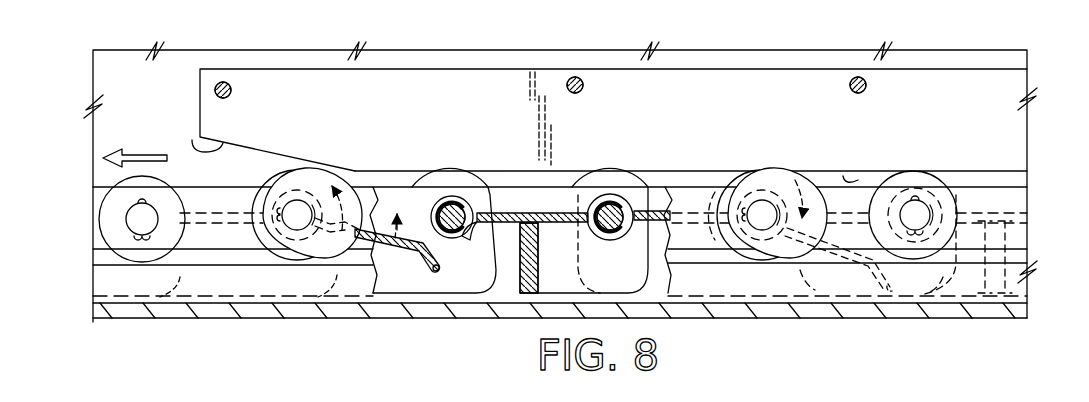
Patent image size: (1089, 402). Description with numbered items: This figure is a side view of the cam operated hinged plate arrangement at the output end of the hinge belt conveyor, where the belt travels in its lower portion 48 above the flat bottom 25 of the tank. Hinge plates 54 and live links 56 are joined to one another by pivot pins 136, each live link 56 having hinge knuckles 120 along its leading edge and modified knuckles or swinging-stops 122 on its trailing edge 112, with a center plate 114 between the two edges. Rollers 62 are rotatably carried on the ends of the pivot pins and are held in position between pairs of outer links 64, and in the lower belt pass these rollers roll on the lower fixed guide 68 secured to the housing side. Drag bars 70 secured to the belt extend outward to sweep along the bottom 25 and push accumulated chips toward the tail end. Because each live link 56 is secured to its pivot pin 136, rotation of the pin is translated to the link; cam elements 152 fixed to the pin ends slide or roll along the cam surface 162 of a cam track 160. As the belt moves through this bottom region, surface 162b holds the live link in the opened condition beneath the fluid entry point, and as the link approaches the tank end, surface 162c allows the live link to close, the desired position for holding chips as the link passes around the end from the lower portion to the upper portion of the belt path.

The flat bottom 25 is at (217, 308).
The lower portion 48 is at (700, 174).
The hinge plate 54 is at (650, 208).
The live link 56 is at (403, 262).
The roller 62 is at (923, 178).
The outer link 64 is at (688, 195).
The lower fixed guide 68 is at (765, 280).
The drag bar 70 is at (530, 283).
The trailing edge 112 is at (440, 270).
The center plate 114 is at (365, 283).
The hinge knuckle 120 is at (307, 195).
The swinging-stop 122 is at (423, 258).
The pivot pin 136 is at (297, 213).
The cam element 152 is at (343, 183).
The cam track 160 is at (668, 78).
The cam surface 162 is at (1000, 174).
The surface 162b is at (858, 175).
The surface 162c is at (192, 146).